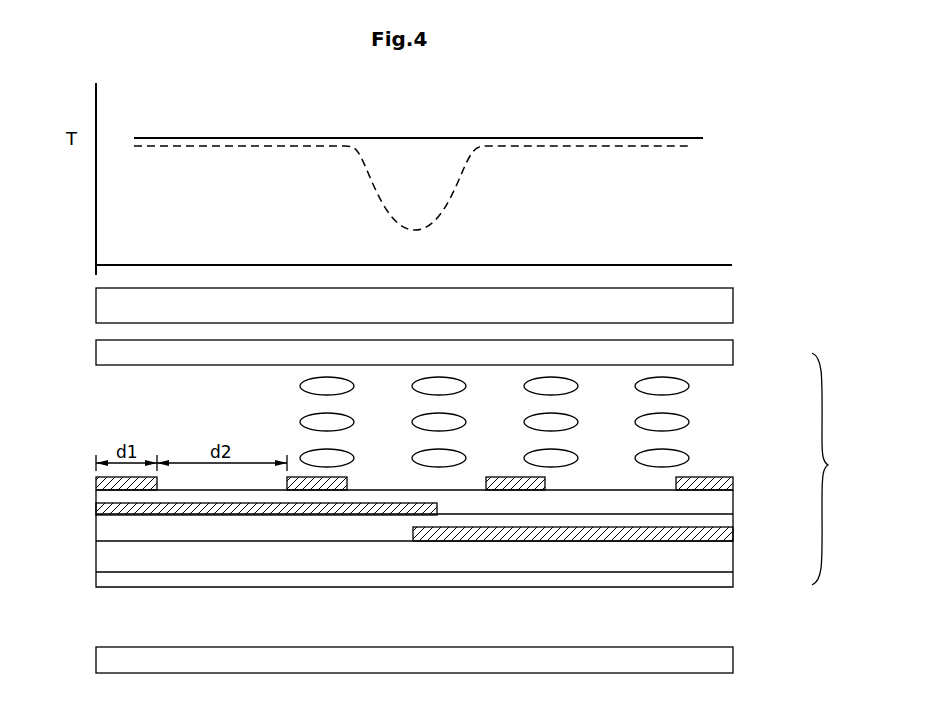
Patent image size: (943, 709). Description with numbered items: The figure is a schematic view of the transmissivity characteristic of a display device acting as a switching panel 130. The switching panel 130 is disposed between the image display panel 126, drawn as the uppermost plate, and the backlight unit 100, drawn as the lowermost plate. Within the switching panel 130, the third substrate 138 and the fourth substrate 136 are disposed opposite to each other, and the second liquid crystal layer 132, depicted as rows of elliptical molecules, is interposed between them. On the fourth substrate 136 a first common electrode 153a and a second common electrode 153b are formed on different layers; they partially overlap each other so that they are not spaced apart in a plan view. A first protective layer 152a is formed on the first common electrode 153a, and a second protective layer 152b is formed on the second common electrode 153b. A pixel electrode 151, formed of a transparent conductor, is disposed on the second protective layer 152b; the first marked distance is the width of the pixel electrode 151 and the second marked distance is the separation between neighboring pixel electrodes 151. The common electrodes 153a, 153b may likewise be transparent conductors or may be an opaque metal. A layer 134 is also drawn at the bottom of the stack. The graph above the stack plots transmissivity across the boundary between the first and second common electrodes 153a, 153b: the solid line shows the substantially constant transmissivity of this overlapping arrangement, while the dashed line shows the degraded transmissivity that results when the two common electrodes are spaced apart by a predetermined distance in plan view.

The backlight unit 100 is at (733, 658).
The image display panel 126 is at (733, 303).
The third substrate 138 is at (733, 348).
The second liquid crystal layer 132 is at (700, 420).
The switching panel 130 is at (839, 469).
The pixel electrode 151 is at (720, 477).
The second protective layer 152b is at (733, 505).
The second common electrode 153b is at (100, 508).
The first protective layer 152a is at (733, 520).
The first common electrode 153a is at (733, 533).
The fourth substrate 136 is at (733, 557).
The lower substrate 134 is at (733, 578).